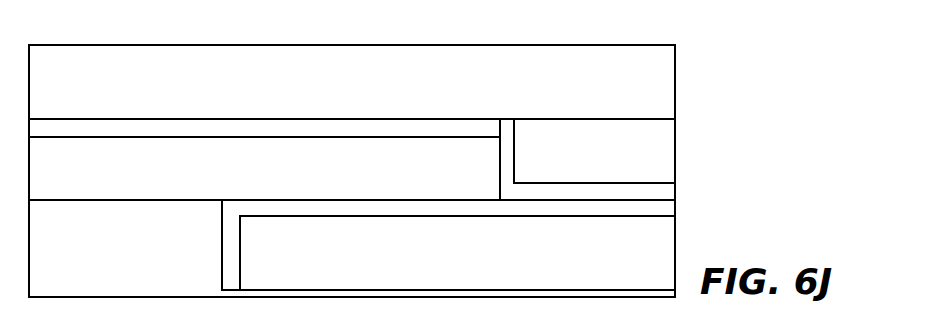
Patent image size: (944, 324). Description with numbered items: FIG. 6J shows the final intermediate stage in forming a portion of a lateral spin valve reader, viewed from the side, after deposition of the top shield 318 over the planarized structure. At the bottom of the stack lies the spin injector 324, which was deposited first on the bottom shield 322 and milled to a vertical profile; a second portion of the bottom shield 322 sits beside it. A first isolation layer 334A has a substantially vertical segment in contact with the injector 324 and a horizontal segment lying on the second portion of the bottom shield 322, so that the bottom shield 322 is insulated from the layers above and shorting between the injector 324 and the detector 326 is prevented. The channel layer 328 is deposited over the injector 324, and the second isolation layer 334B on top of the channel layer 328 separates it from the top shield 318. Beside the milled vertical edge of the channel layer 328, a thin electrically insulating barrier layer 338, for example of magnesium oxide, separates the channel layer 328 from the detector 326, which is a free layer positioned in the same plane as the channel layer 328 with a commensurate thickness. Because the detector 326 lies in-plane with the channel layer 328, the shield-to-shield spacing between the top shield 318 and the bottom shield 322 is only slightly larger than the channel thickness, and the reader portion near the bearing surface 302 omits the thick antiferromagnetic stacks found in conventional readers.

The bearing surface 302 is at (675, 262).
The top shield 318 is at (585, 101).
The bottom shield 322 is at (616, 272).
The spin injector 324 is at (69, 260).
The detector 326 is at (585, 165).
The channel layer 328 is at (73, 186).
The first isolation layer 334A is at (230, 262).
The second isolation layer 334B is at (280, 127).
The barrier layer 338 is at (577, 192).